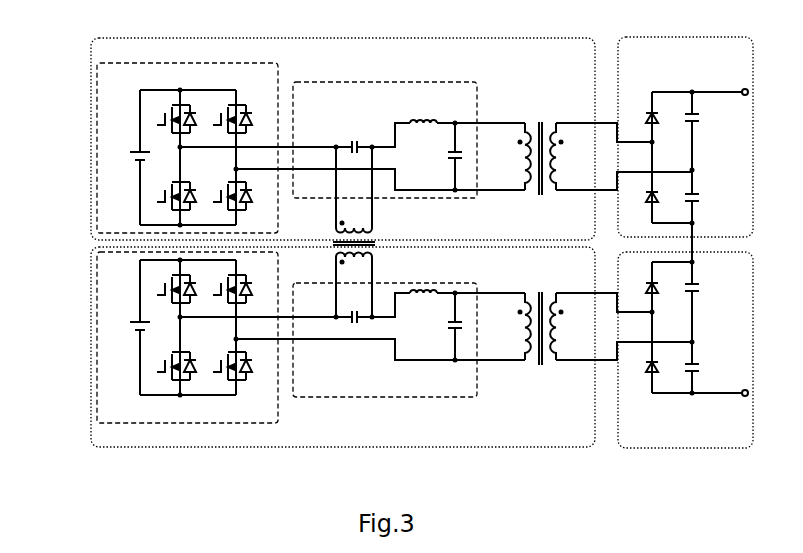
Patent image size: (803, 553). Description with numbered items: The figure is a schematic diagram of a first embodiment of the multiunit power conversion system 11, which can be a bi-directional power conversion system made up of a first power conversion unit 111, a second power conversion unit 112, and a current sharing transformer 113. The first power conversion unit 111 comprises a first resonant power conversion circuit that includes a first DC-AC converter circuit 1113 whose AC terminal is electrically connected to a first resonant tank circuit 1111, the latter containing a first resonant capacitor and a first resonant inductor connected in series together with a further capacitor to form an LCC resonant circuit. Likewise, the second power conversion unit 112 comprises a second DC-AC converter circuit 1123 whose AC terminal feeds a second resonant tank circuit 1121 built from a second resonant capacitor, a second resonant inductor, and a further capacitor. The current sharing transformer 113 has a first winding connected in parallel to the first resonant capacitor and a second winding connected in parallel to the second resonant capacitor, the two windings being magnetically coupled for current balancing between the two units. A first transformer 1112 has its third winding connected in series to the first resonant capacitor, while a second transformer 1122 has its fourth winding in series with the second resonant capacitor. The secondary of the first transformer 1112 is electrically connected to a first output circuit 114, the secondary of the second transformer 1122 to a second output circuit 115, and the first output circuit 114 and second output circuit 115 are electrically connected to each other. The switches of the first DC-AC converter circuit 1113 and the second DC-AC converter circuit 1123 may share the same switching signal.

The multiunit power conversion system 11 is at (110, 20).
The first power conversion unit 111 is at (361, 126).
The second power conversion unit 112 is at (363, 361).
The current sharing transformer 113 is at (333, 243).
The first output circuit 114 is at (685, 149).
The second output circuit 115 is at (685, 350).
The first resonant tank circuit 1111 is at (352, 140).
The first transformer 1112 is at (539, 120).
The first DC-AC converter circuit 1113 is at (97, 63).
The second resonant tank circuit 1121 is at (352, 341).
The second transformer 1122 is at (538, 363).
The second DC-AC converter circuit 1123 is at (98, 365).